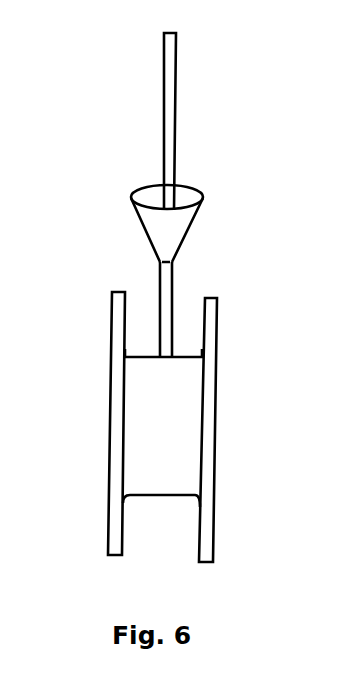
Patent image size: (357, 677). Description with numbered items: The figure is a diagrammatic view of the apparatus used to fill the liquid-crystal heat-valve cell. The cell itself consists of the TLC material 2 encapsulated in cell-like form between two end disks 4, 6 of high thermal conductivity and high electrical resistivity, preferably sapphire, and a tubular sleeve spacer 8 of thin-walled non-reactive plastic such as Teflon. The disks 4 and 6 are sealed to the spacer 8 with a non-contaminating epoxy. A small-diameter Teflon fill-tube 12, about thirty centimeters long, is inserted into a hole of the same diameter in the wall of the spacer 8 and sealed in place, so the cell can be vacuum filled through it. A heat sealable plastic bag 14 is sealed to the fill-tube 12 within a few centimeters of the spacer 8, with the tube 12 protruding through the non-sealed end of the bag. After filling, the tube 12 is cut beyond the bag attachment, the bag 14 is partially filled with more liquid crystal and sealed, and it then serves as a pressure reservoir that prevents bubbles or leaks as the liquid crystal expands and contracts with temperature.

The TLC material 2 is at (173, 393).
The end disk 4 is at (111, 435).
The end disk 6 is at (213, 515).
The tubular sleeve spacer 8 is at (175, 497).
The fill-tube 12 is at (172, 273).
The heat sealable plastic bag 14 is at (180, 220).